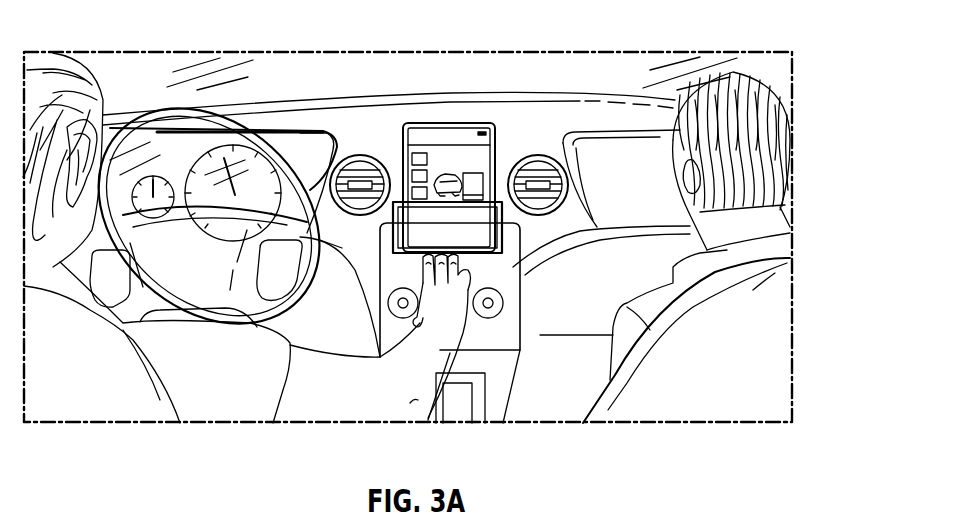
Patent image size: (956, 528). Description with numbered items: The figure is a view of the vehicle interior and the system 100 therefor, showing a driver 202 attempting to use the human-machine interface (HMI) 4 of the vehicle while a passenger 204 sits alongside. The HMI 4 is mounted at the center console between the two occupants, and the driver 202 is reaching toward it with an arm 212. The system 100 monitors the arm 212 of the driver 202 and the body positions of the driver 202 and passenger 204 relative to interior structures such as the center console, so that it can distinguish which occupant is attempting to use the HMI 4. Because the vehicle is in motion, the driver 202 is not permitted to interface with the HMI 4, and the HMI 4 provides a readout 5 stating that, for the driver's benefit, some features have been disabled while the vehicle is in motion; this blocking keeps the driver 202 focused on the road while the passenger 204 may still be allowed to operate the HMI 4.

The system 100 is at (797, 54).
The driver 202 is at (50, 70).
The passenger 204 is at (767, 123).
The arm 212 is at (352, 400).
The human-machine interface 4 is at (456, 155).
The readout 5 is at (497, 228).